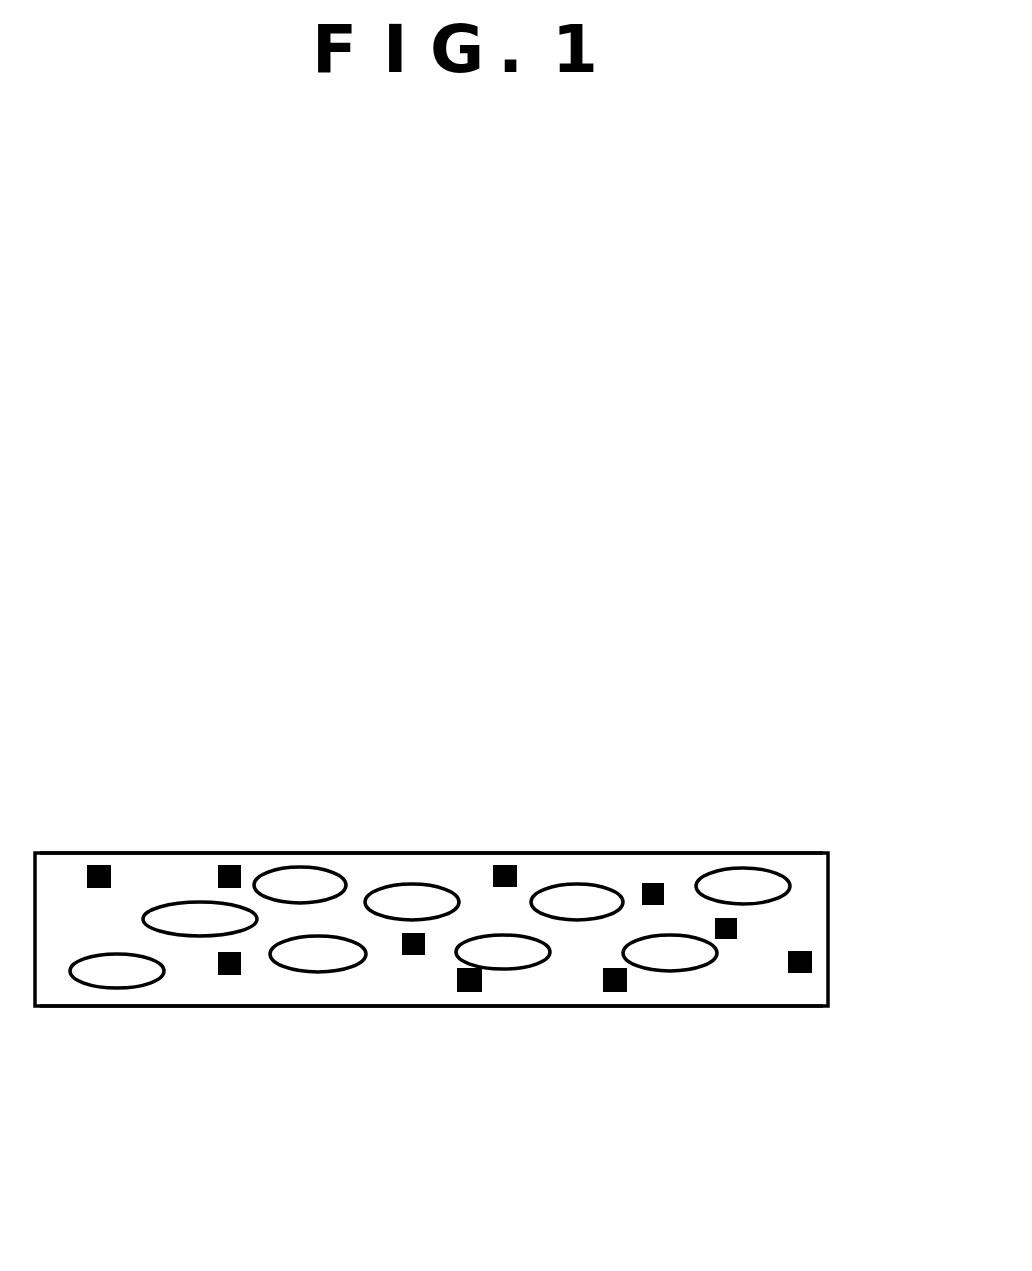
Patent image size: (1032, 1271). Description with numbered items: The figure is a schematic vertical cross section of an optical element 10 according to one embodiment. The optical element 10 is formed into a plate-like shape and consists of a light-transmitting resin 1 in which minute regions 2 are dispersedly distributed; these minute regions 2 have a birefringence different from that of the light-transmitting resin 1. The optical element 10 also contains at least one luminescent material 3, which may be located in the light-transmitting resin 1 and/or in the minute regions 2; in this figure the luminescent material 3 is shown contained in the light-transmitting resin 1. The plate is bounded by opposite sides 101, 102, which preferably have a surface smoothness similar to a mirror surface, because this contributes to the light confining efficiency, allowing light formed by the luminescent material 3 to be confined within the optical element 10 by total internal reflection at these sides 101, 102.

The light-transmitting resin 1 is at (812, 916).
The minute regions 2 is at (578, 893).
The luminescent material 3 is at (608, 992).
The optical element 10 is at (345, 806).
The opposite side 101 is at (453, 853).
The opposite side 102 is at (403, 1006).